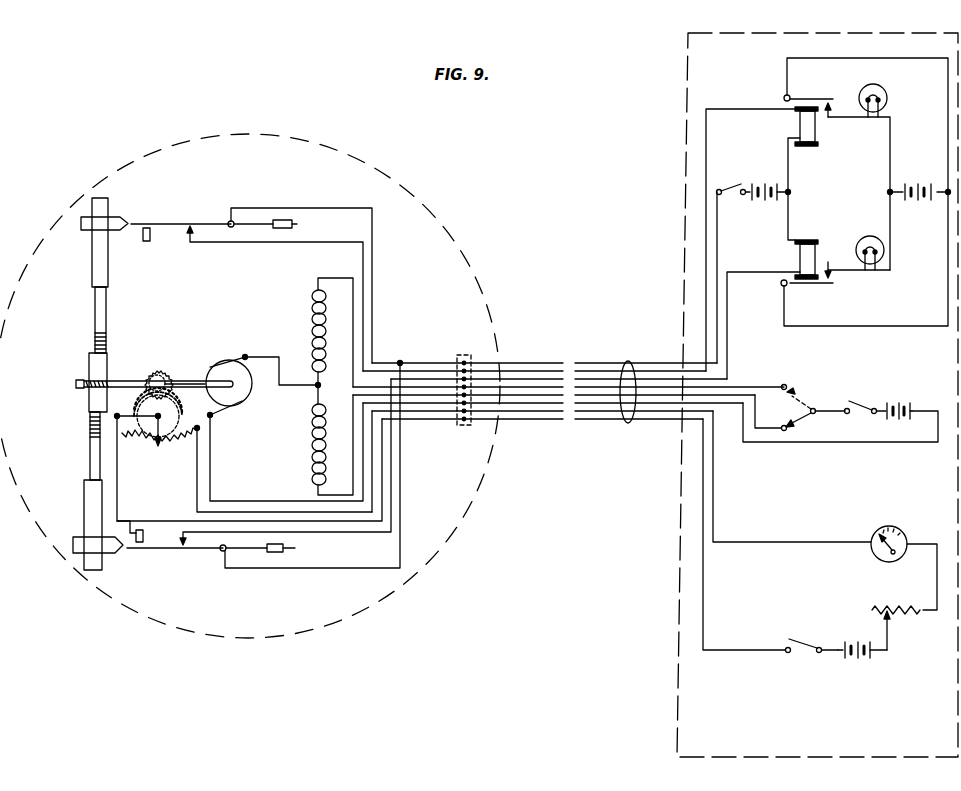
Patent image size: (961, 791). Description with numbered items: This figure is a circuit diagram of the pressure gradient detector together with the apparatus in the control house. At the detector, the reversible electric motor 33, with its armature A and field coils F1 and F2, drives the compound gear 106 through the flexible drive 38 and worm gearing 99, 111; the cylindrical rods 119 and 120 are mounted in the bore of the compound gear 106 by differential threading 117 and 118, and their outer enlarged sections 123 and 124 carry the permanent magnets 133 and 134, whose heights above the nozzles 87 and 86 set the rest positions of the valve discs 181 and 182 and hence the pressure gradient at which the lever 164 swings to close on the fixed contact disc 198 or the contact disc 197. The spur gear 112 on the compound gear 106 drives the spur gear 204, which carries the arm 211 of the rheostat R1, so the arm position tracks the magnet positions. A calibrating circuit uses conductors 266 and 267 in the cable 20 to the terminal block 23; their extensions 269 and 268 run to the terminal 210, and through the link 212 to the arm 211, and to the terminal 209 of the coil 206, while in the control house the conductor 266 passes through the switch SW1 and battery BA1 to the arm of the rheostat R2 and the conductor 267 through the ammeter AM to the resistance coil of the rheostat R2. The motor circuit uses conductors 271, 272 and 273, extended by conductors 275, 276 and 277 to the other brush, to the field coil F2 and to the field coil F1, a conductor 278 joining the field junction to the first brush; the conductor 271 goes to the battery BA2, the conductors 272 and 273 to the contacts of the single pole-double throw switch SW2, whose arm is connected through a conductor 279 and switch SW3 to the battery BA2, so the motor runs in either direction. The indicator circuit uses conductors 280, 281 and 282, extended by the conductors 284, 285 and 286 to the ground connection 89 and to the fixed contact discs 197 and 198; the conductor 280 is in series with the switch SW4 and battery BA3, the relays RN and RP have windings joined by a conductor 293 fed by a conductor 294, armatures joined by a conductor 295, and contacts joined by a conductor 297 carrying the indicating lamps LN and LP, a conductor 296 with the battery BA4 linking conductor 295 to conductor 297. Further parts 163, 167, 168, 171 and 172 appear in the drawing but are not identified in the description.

The cable 20 is at (627, 423).
The terminal block 23 is at (460, 355).
The reversible electric motor 33 is at (268, 310).
The flexible drive 38 is at (190, 381).
The nozzle 86 is at (143, 236).
The nozzle 87 is at (133, 520).
The ground connection 89 is at (233, 221).
The worm gearing 99 is at (86, 373).
The compound gear 106 is at (98, 361).
The worm gearing 111 is at (78, 389).
The spur gear 112 is at (161, 373).
The differential threading 117 is at (92, 428).
The differential threading 118 is at (103, 342).
The cylindrical rod 119 is at (92, 459).
The cylindrical rod 120 is at (97, 312).
The outer enlarged section 123 is at (92, 504).
The outer enlarged section 124 is at (100, 252).
The permanent magnet 133 is at (101, 555).
The permanent magnet 134 is at (117, 217).
The lower contact arm 163 is at (172, 550).
The lever 164 is at (178, 221).
The lower pivot 167 is at (221, 551).
The upper pivot 168 is at (228, 222).
The lower resistor 171 is at (284, 552).
The upper resistor 172 is at (293, 221).
The valve disc 181 is at (140, 550).
The valve disc 182 is at (148, 221).
The fixed contact disc 197 is at (183, 540).
The fixed contact disc 198 is at (186, 229).
The spur gear 204 is at (132, 447).
The coil of rheostat 206 is at (162, 431).
The terminal 209 is at (199, 429).
The terminal 210 is at (112, 397).
The arm of rheostat 211 is at (155, 455).
The link 212 is at (125, 428).
The conductor 266 is at (703, 583).
The conductor 267 is at (714, 497).
The conductor 268 is at (373, 463).
The conductor 269 is at (383, 485).
The conductor 271 is at (825, 443).
The conductor 272 is at (768, 431).
The conductor 273 is at (752, 387).
The conductor 275 is at (243, 500).
The conductor 276 is at (354, 442).
The conductor 277 is at (355, 298).
The conductor 278 is at (282, 387).
The conductor 279 is at (826, 402).
The conductor 280 is at (717, 280).
The conductor 281 is at (728, 310).
The conductor 282 is at (706, 308).
The conductor 284 is at (374, 257).
The conductor 285 is at (352, 534).
The conductor 286 is at (323, 246).
The conductor 293 is at (789, 170).
The conductor 294 is at (790, 194).
The conductor 295 is at (867, 58).
The conductor 296 is at (933, 190).
The conductor 297 is at (890, 170).
The armature A is at (262, 386).
The field coil F1 is at (313, 312).
The field coil F2 is at (312, 455).
The rheostat R1 is at (161, 458).
The rheostat R2 is at (896, 607).
The ammeter AM is at (886, 526).
The relay RN is at (797, 126).
The relay RP is at (795, 257).
The indicating lamp LN is at (884, 88).
The indicating lamp LP is at (866, 237).
The switch SW1 is at (807, 653).
The single pole-double throw switch SW2 is at (803, 416).
The switch SW3 is at (864, 400).
The switch SW4 is at (742, 183).
The battery BA1 is at (860, 659).
The battery BA2 is at (900, 400).
The battery BA3 is at (762, 201).
The battery BA4 is at (915, 201).